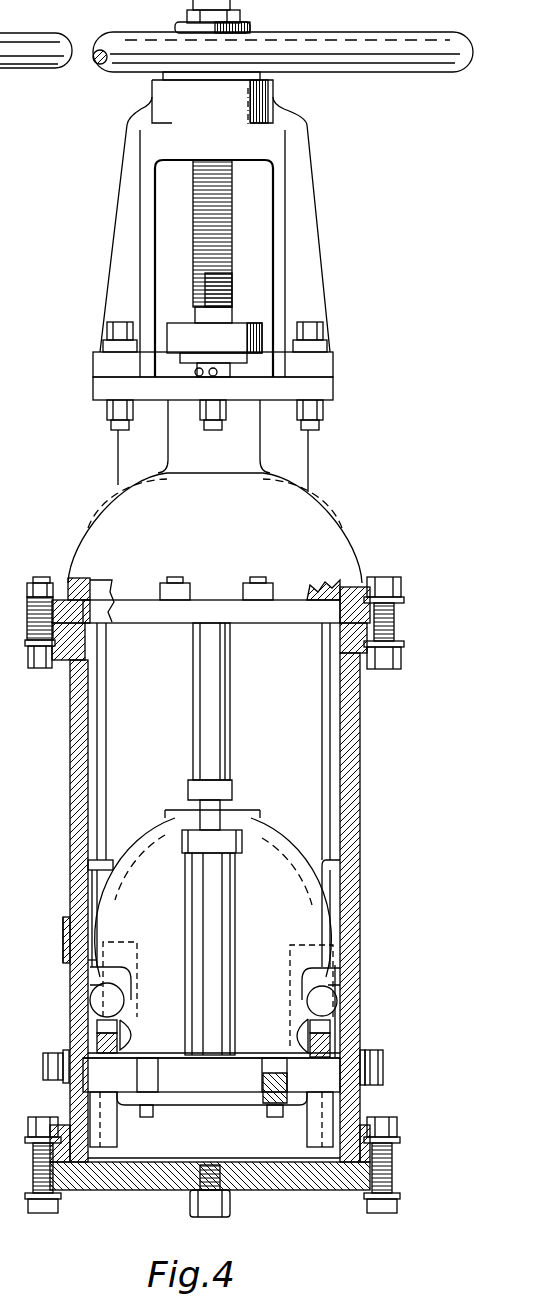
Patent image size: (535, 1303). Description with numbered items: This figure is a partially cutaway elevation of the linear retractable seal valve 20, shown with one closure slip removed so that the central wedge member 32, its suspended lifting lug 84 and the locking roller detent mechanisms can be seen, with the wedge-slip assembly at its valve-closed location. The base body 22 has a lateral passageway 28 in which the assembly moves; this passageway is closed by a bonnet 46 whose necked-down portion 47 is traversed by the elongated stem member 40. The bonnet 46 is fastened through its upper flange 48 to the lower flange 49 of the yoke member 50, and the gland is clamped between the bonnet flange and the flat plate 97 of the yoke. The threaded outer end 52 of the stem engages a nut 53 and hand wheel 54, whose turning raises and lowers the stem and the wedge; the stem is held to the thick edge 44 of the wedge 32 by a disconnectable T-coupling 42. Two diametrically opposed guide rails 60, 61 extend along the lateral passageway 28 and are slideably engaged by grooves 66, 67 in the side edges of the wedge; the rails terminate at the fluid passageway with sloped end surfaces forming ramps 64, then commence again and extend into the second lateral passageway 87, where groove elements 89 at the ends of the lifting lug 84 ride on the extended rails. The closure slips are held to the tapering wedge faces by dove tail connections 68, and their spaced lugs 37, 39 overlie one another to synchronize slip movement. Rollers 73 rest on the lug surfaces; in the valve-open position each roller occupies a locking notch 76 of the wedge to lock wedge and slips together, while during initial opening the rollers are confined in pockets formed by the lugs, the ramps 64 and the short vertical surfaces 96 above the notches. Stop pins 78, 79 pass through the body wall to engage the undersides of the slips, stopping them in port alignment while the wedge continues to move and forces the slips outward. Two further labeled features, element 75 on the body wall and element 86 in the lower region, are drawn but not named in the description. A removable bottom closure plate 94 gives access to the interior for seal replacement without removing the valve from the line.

The linear retractable seal valve 20 is at (362, 728).
The base body 22 is at (77, 739).
The lateral passageway 28 is at (117, 684).
The central wedge member 32 is at (112, 864).
The lugs 37 is at (107, 1026).
The lugs 39 is at (103, 1043).
The stem member 40 is at (228, 245).
The T-coupling 42 is at (228, 838).
The thick edge 44 is at (260, 820).
The bonnet 46 is at (343, 530).
The necked-down portion 47 is at (253, 463).
The upper flange 48 is at (333, 386).
The lower flange 49 is at (333, 360).
The yoke member 50 is at (312, 266).
The outer end 52 is at (200, 210).
The nut 53 is at (243, 19).
The hand wheel 54 is at (406, 17).
The guide rail 60 is at (100, 735).
The guide rail 61 is at (333, 660).
The ramps 64 is at (90, 977).
The groove 66 is at (97, 878).
The groove 67 is at (330, 872).
The dove tail connection 68 is at (216, 946).
The rollers 73 is at (114, 998).
The body step 75 is at (31, 928).
The locking notches 76 is at (134, 1034).
The stop pin 78 is at (43, 1067).
The stop pin 79 is at (385, 1068).
The lifting lug 84 is at (227, 1102).
The support plate 86 is at (158, 1081).
The second lateral passageway 87 is at (232, 1152).
The groove elements 89 is at (117, 1136).
The bottom closure plate 94 is at (137, 1183).
The short vertical surfaces 96 is at (118, 978).
The flat plate 97 is at (178, 330).